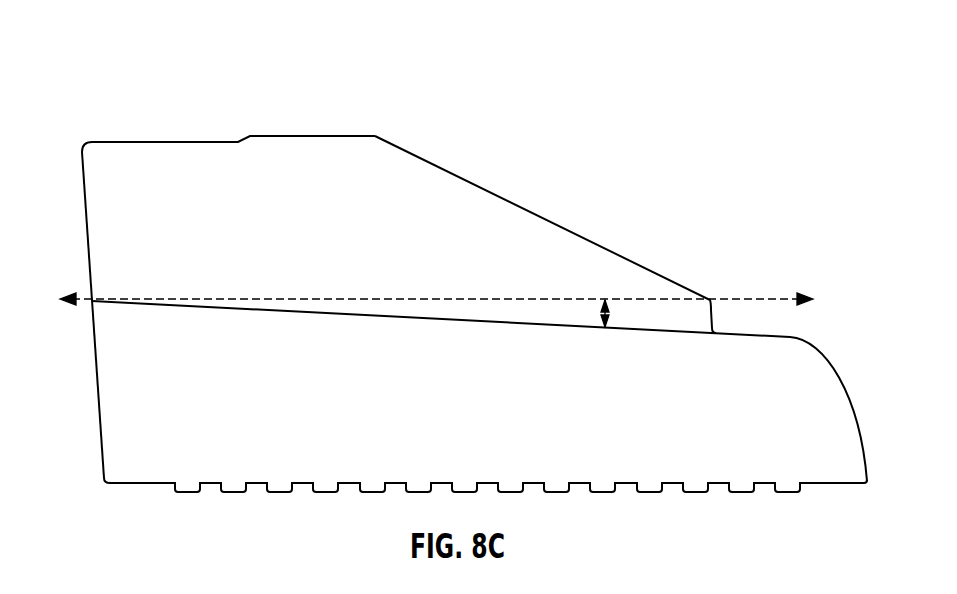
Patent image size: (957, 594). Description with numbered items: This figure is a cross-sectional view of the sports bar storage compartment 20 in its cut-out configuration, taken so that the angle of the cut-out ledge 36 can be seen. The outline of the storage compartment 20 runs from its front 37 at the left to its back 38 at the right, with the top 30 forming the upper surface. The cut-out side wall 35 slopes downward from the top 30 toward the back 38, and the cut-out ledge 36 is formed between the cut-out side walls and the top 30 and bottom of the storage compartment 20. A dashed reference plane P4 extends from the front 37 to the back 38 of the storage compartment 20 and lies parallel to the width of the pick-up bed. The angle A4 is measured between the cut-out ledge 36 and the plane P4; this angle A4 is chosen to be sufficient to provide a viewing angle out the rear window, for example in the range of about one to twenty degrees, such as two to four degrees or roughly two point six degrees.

The storage compartment 20 is at (461, 252).
The top 30 is at (176, 141).
The cut-out side wall 35 is at (524, 218).
The cut-out ledge 36 is at (538, 324).
The front 37 is at (97, 372).
The back 38 is at (832, 366).
The plane P4 is at (453, 302).
The angle A4 is at (613, 330).